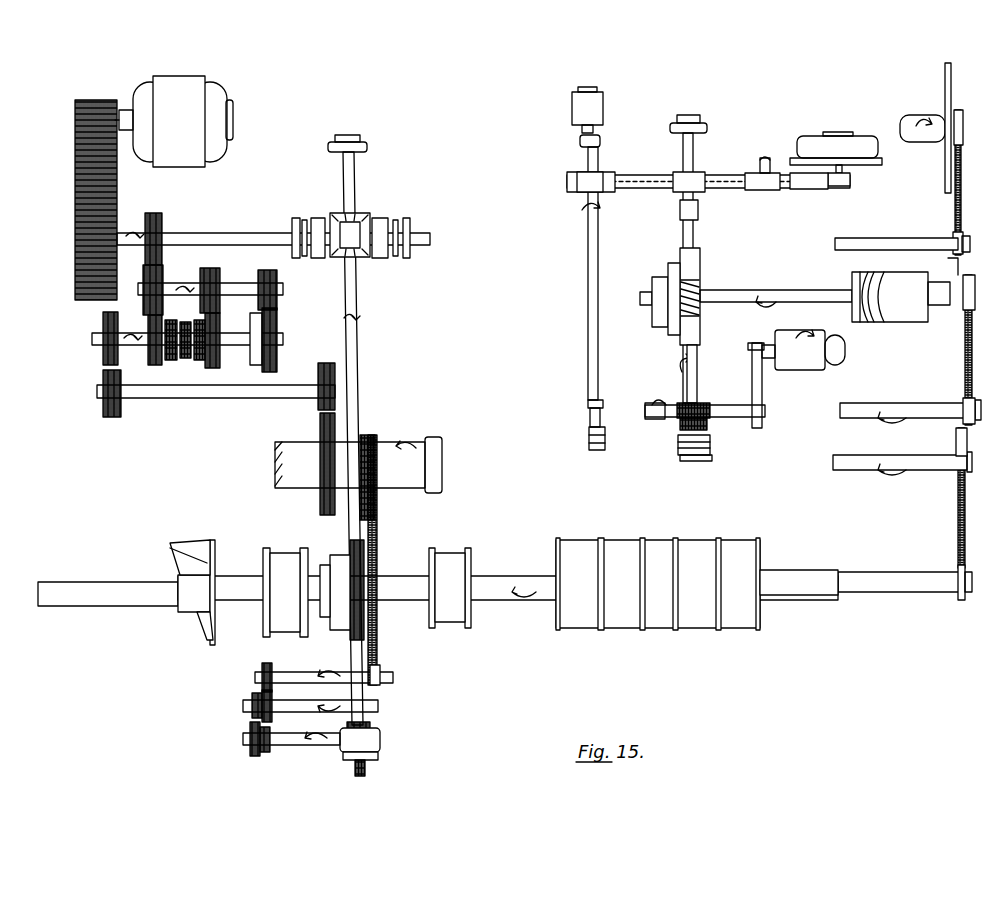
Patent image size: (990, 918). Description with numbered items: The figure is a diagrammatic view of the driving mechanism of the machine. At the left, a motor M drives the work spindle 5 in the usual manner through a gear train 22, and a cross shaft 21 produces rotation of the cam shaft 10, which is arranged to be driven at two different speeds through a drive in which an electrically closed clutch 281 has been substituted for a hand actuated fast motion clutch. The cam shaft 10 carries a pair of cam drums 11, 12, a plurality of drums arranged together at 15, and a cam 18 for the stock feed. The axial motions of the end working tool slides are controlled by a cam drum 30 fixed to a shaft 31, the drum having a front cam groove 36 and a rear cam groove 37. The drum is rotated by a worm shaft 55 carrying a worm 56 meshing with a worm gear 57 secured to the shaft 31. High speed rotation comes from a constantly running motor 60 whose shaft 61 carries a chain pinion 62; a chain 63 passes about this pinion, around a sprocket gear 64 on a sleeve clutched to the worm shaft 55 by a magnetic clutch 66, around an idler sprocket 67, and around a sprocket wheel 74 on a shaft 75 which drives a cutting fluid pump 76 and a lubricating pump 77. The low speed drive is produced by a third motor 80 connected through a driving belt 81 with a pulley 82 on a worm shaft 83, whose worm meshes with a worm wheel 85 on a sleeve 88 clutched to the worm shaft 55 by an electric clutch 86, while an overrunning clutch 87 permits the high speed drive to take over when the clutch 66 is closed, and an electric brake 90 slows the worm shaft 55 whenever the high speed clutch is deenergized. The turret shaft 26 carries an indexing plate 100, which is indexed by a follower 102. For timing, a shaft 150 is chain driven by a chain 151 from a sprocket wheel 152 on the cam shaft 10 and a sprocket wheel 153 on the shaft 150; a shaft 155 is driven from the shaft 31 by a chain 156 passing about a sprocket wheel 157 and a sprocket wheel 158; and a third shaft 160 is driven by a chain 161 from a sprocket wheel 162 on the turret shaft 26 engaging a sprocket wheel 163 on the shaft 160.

The motor M is at (181, 86).
The gear train 22 is at (323, 325).
The cross shaft 21 is at (357, 393).
The work spindle 5 is at (384, 440).
The cam shaft 10 is at (515, 577).
The cam 18 is at (205, 544).
The cam drum 11 is at (286, 552).
The cam drum 12 is at (452, 552).
The drums 15 is at (658, 553).
The electrically closed clutch 281 is at (380, 741).
The cutting fluid pump 76 is at (572, 108).
The shaft 75 is at (589, 285).
The sprocket wheel 74 is at (574, 178).
The lubricating pump 77 is at (590, 440).
The magnetic clutch 66 is at (690, 124).
The sprocket gear 64 is at (702, 175).
The worm shaft 55 is at (684, 236).
The worm gear 57 is at (701, 278).
The worm 56 is at (701, 293).
The shaft 31 is at (818, 291).
The cam drum 30 is at (903, 323).
The cam groove 37 is at (884, 298).
The cam groove 36 is at (862, 323).
The motor 60 is at (845, 141).
The shaft 61 is at (845, 177).
The chain pinion 62 is at (848, 186).
The chain 63 is at (817, 190).
The idler sprocket 67 is at (765, 190).
The shaft 26 is at (906, 117).
The indexing plate 100 is at (947, 65).
The chain 161 is at (955, 203).
The sprocket wheel 162 is at (955, 150).
The sprocket wheel 163 is at (953, 240).
The third shaft 160 is at (860, 246).
The follower 102 is at (948, 262).
The chain 156 is at (966, 341).
The sprocket wheel 157 is at (965, 301).
The shaft 155 is at (862, 405).
The sprocket wheel 158 is at (966, 402).
The chain 151 is at (960, 510).
The shaft 150 is at (855, 453).
The sprocket wheel 153 is at (958, 440).
The sprocket wheel 152 is at (958, 568).
The motor 80 is at (805, 371).
The pulley 82 is at (762, 420).
The driving belt 81 is at (752, 371).
The worm shaft 83 is at (730, 418).
The sleeve 88 is at (703, 405).
The worm wheel 85 is at (678, 405).
The overrunning clutch 87 is at (680, 436).
The electric clutch 86 is at (680, 452).
The electric brake 90 is at (700, 461).